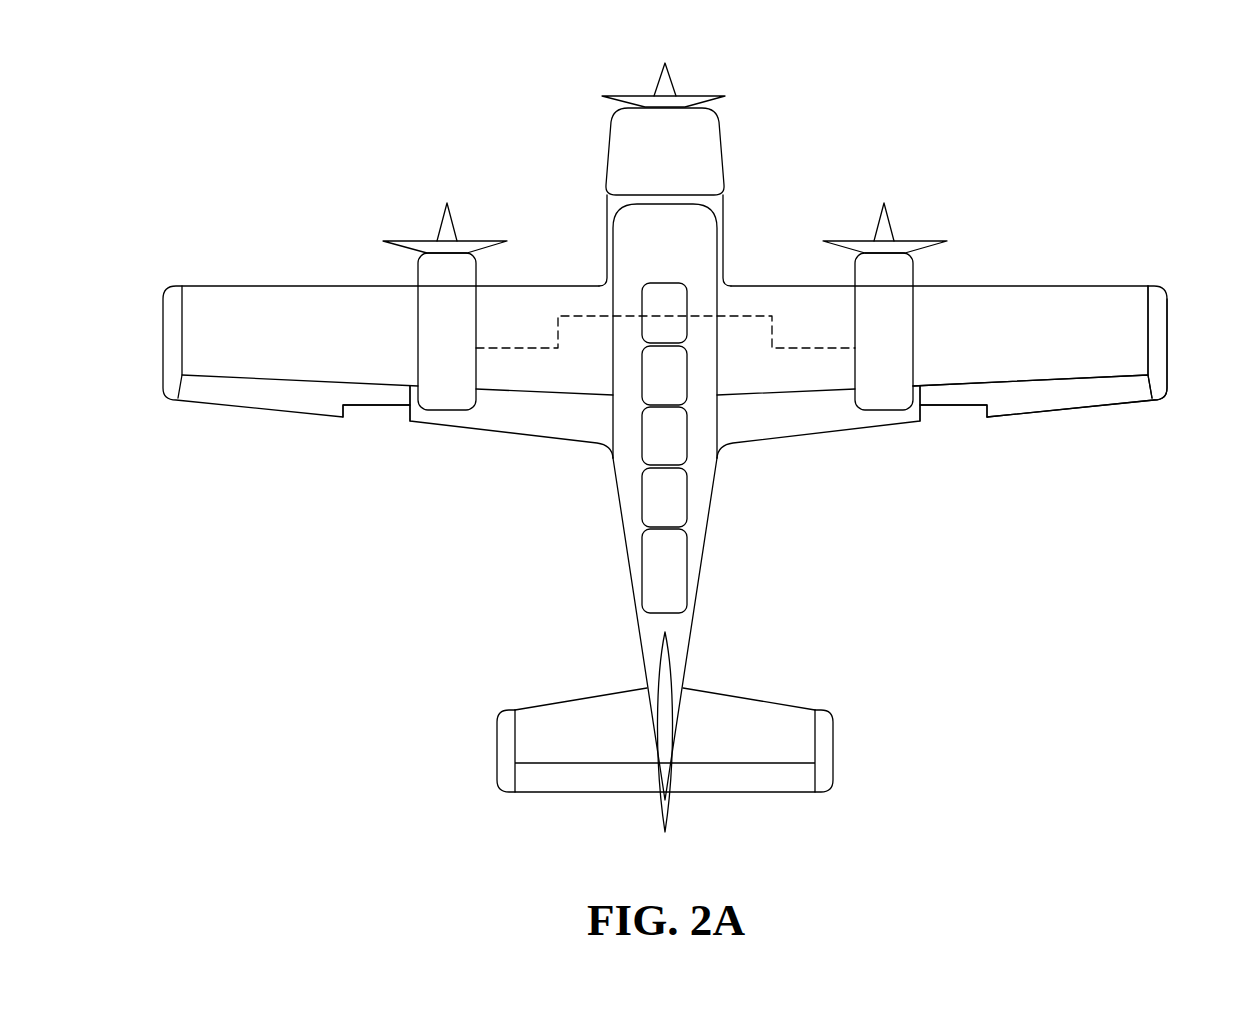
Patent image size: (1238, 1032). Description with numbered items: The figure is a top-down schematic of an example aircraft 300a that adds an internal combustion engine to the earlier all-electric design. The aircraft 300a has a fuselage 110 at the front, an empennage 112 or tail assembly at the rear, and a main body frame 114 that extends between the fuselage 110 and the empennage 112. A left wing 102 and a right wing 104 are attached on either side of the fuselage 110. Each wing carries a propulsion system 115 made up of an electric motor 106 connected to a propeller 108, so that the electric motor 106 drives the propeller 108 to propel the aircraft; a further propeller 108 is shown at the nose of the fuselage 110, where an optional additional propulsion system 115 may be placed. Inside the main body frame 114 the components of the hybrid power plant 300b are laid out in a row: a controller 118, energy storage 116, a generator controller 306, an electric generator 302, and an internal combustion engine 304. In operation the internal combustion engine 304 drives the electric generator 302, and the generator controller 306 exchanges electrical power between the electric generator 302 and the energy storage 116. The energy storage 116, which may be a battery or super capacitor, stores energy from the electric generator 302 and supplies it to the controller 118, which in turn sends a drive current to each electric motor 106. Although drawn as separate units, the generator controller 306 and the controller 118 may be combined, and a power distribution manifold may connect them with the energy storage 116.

The left wing 102 is at (222, 232).
The right wing 104 is at (1113, 390).
The electric motor 106 is at (425, 318).
The propeller 108 is at (690, 96).
The fuselage 110 is at (738, 159).
The empennage 112 is at (850, 754).
The main body frame 114 is at (718, 621).
The propulsion system 115 is at (397, 372).
The energy storage 116 is at (694, 387).
The controller 118 is at (652, 273).
The electric generator 302 is at (695, 498).
The internal combustion engine 304 is at (695, 557).
The generator controller 306 is at (634, 453).
The aircraft 300a is at (1070, 100).
The power plant 300b is at (594, 545).